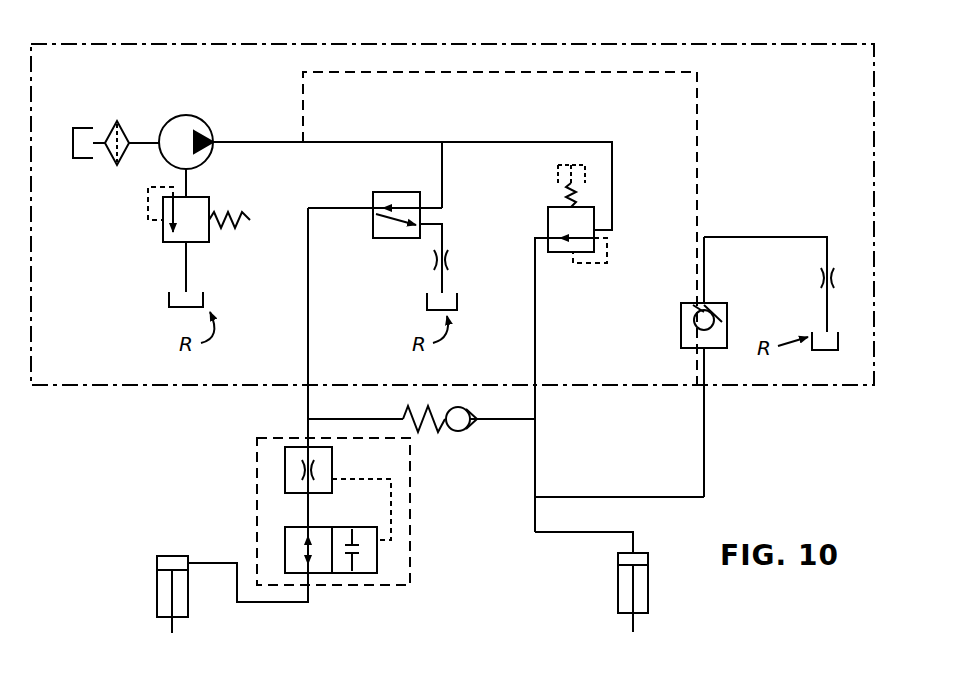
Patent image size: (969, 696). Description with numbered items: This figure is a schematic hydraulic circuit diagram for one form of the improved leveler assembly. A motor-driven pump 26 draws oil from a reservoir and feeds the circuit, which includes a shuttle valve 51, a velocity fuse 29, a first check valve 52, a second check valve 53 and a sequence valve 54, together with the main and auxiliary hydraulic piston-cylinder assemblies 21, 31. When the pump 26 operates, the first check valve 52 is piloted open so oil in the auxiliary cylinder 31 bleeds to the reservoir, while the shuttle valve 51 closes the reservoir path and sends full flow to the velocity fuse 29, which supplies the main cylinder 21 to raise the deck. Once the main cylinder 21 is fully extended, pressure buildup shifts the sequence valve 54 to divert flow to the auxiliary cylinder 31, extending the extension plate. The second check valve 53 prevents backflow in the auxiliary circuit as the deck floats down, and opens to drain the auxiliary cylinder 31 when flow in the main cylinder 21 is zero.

The main hydraulic piston-cylinder assembly 21 is at (178, 548).
The motor-driven pump 26 is at (228, 92).
The velocity fuse 29 is at (275, 461).
The auxiliary hydraulic piston-cylinder assembly 31 is at (660, 562).
The shuttle valve 51 is at (404, 250).
The first check valve 52 is at (679, 328).
The second check valve 53 is at (458, 437).
The sequence valve 54 is at (565, 256).